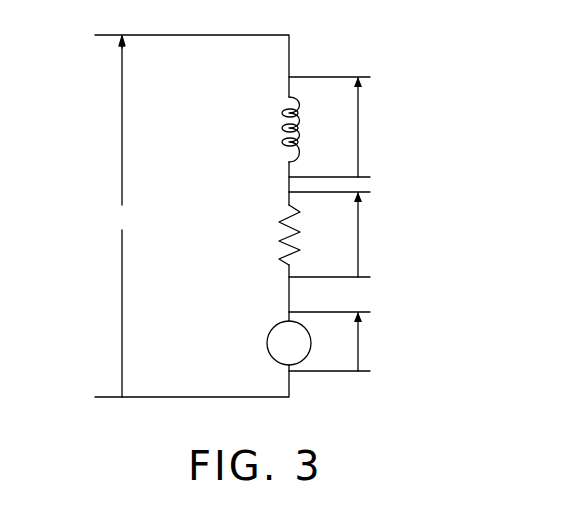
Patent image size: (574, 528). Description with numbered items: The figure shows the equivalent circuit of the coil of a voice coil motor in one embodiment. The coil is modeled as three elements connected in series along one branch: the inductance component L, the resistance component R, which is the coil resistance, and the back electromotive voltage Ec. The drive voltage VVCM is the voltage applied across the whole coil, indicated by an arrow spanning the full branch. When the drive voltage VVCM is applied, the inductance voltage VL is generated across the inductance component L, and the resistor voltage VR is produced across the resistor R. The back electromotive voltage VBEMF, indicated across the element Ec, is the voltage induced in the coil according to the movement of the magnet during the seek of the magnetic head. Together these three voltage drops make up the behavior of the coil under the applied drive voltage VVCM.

The inductance component L is at (284, 127).
The resistance component R is at (283, 238).
The back electromotive voltage Ec is at (289, 343).
The inductance voltage VL is at (376, 127).
The resistor voltage VR is at (378, 235).
The back electromotive voltage VBEMF is at (397, 342).
The drive voltage VVCM is at (120, 217).